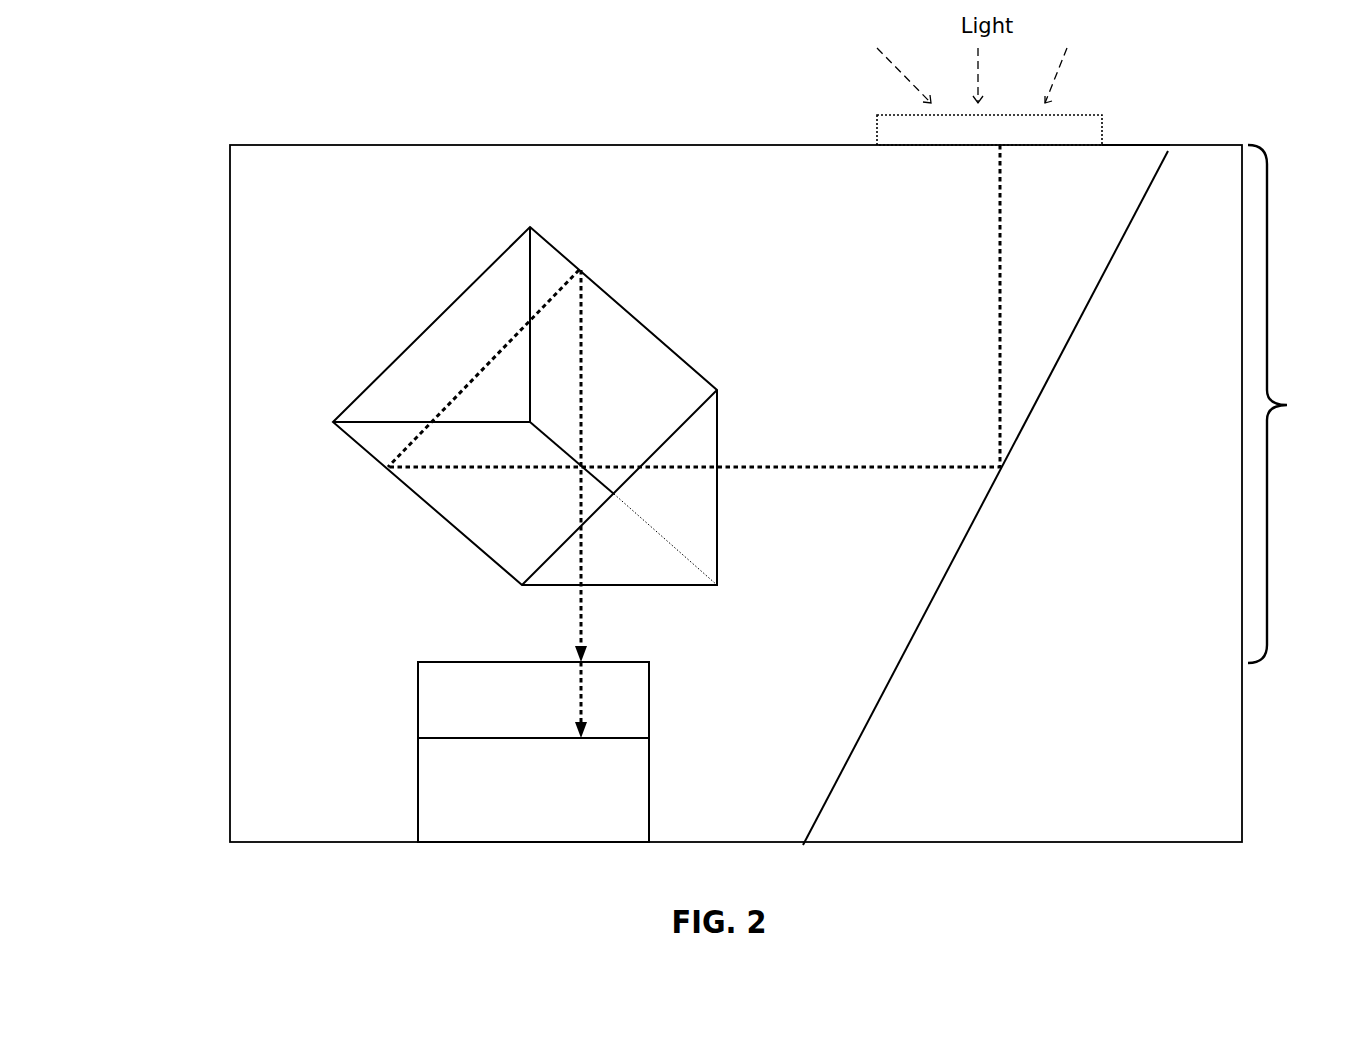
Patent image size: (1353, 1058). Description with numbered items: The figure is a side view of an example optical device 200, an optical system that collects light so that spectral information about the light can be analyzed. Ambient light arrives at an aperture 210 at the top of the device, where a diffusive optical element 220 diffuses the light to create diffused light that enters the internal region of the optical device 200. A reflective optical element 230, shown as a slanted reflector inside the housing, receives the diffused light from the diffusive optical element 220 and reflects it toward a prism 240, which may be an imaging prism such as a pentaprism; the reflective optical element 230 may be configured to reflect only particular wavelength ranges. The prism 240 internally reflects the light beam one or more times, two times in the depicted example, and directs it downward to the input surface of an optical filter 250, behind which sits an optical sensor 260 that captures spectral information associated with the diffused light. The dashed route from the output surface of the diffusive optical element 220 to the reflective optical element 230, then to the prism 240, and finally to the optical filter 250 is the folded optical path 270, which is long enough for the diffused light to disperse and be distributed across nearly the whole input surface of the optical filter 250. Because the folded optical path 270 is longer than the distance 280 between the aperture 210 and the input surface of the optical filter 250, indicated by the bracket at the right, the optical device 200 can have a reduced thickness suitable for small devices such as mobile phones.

The optical device 200 is at (272, 134).
The aperture 210 is at (920, 153).
The diffusive optical element 220 is at (969, 141).
The reflective optical element 230 is at (1084, 434).
The prism 240 is at (462, 320).
The optical filter 250 is at (514, 712).
The optical sensor 260 is at (514, 802).
The folded optical path 270 is at (846, 458).
The distance 280 is at (1294, 404).